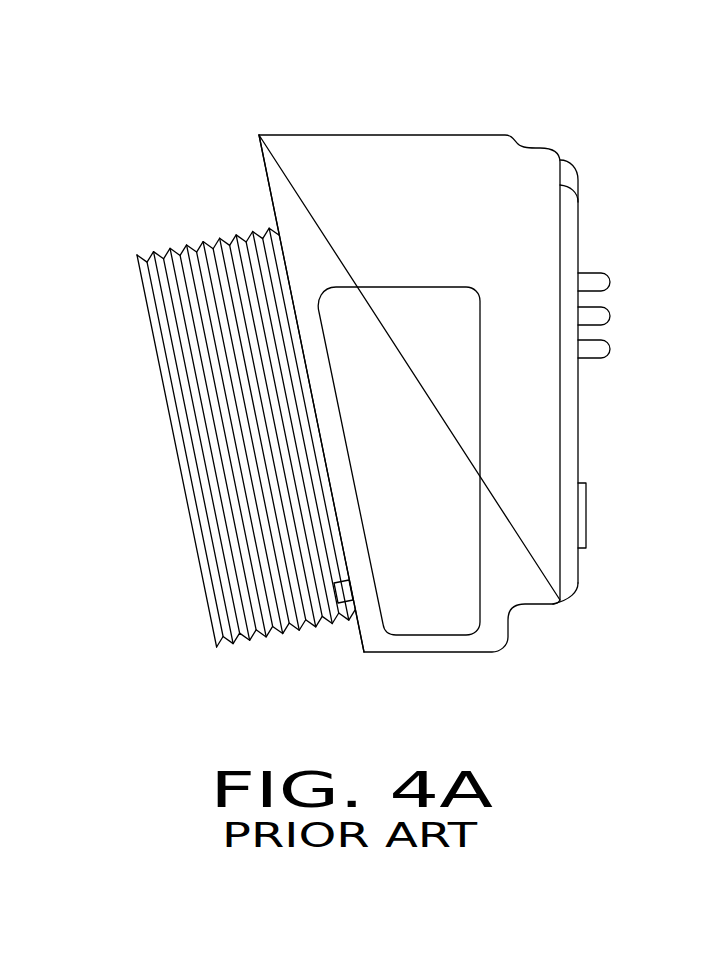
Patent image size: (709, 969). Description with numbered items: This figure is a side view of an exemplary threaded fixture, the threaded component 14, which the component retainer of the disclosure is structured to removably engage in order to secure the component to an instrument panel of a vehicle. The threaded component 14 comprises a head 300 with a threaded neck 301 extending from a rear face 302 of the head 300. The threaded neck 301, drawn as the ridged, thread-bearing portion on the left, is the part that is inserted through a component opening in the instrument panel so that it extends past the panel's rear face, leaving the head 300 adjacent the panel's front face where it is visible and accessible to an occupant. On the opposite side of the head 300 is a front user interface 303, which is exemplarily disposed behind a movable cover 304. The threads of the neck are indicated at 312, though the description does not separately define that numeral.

The threaded component 14 is at (516, 662).
The head 300 is at (385, 160).
The threaded neck 301 is at (192, 310).
The rear face 302 is at (266, 173).
The front user interface 303 is at (561, 238).
The movable cover 304 is at (566, 432).
The threads 312 is at (222, 252).